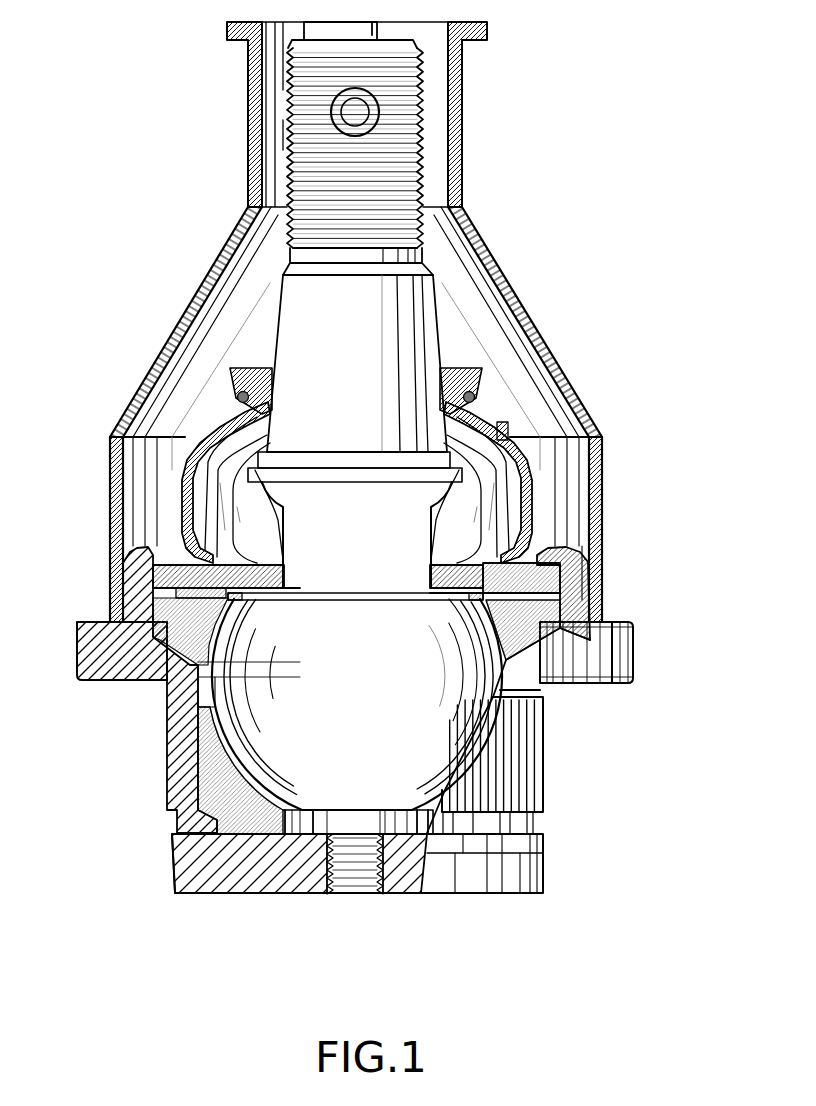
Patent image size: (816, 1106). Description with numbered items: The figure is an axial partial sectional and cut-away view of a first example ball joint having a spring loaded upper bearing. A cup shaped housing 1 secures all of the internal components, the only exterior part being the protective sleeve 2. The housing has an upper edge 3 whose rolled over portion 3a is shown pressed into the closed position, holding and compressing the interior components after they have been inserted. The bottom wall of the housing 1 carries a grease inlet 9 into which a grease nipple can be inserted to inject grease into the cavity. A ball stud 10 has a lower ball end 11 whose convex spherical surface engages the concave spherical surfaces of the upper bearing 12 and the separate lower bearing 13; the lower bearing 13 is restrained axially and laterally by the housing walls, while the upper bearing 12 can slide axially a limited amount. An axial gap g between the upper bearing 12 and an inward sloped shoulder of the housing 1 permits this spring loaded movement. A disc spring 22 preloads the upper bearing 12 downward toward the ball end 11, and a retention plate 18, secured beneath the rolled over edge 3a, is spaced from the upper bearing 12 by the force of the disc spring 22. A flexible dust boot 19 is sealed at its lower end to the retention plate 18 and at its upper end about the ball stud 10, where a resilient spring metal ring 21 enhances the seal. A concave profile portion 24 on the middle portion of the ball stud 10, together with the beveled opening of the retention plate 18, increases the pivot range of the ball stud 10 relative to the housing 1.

The housing 1 is at (192, 852).
The exterior protective sleeve 2 is at (248, 140).
The upper edge of housing 3 is at (150, 545).
The upper edge 3a is at (560, 547).
The grease inlet 9 is at (357, 867).
The ball stud 10 is at (370, 163).
The lower ball end 11 is at (385, 704).
The upper bearing 12 is at (180, 627).
The lower bearing 13 is at (228, 780).
The upper retention plate 18 is at (165, 578).
The dust boot 19 is at (182, 475).
The resilient spring metal ring 21 is at (240, 398).
The disc spring 22 is at (517, 627).
The concave profile portion 24 is at (437, 517).
The axial gap g is at (288, 632).